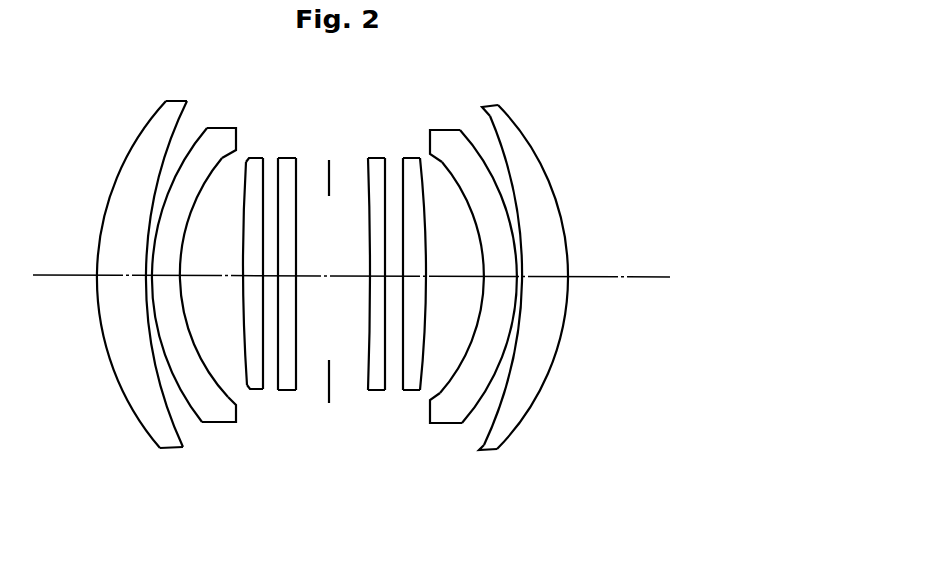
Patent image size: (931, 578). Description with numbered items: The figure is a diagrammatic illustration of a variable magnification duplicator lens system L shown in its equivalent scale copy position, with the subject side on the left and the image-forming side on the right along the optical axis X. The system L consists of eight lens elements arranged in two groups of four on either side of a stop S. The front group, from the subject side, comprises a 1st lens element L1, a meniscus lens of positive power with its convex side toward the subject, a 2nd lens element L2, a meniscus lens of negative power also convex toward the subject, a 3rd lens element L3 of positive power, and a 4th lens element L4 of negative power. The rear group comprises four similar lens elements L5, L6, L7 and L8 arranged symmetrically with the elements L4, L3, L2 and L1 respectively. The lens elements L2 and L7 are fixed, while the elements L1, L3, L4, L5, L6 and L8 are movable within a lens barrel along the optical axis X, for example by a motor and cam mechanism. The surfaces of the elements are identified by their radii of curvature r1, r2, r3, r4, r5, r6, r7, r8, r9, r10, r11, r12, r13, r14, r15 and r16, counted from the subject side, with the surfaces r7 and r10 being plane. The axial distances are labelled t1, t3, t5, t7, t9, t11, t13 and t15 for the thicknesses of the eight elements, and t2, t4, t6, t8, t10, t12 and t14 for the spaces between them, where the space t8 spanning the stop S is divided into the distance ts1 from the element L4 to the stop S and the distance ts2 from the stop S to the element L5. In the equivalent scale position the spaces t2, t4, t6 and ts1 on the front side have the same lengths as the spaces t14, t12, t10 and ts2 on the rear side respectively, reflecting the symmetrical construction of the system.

The duplicator lens system L is at (581, 77).
The optical axis X is at (58, 278).
The stop S is at (330, 388).
The 1st lens element L1 is at (148, 274).
The 2nd lens element L2 is at (204, 279).
The 3rd lens element L3 is at (259, 294).
The 4th lens element L4 is at (302, 290).
The 5th lens element L5 is at (379, 286).
The 6th lens element L6 is at (425, 286).
The 7th lens element L7 is at (473, 286).
The 8th lens element L8 is at (523, 292).
The radius of curvature at position 1 r1 is at (152, 125).
The radius of curvature at position 2 r2 is at (188, 101).
The radius of curvature at position 3 r3 is at (201, 127).
The radius of curvature at position 4 r4 is at (222, 157).
The radius of curvature at position 5 r5 is at (245, 162).
The radius of curvature at position 6 r6 is at (265, 158).
The radius of curvature at position 7 r7 is at (280, 166).
The radius of curvature at position 8 r8 is at (297, 166).
The radius of curvature at position 9 r9 is at (363, 244).
The radius of curvature at position 10 r10 is at (380, 158).
The radius of curvature at position 11 r11 is at (399, 160).
The radius of curvature at position 12 r12 is at (420, 157).
The radius of curvature at position 13 r13 is at (441, 161).
The radius of curvature at position 14 r14 is at (469, 140).
The radius of curvature at position 15 r15 is at (486, 110).
The radius of curvature at position 16 r16 is at (508, 115).
The axial space at position 1 t1 is at (110, 273).
The axial space at position 2 t2 is at (149, 283).
The axial space at position 3 t3 is at (160, 272).
The axial space at position 4 t4 is at (203, 273).
The axial space at position 5 t5 is at (248, 282).
The axial space at position 6 t6 is at (272, 275).
The axial space at position 7 t7 is at (293, 275).
The axial space at position 8 t8 is at (322, 275).
The axial space at position 9 t9 is at (375, 275).
The axial space at position 10 t10 is at (394, 276).
The axial space at position 11 t11 is at (424, 286).
The axial space at position 12 t12 is at (448, 272).
The axial space at position 13 t13 is at (497, 273).
The axial space at position 14 t14 is at (516, 279).
The axial space at position 15 t15 is at (543, 273).
The axial space between the 4th lens element and the stop ts1 is at (308, 280).
The axial space between the 5th lens element and the stop ts2 is at (347, 279).